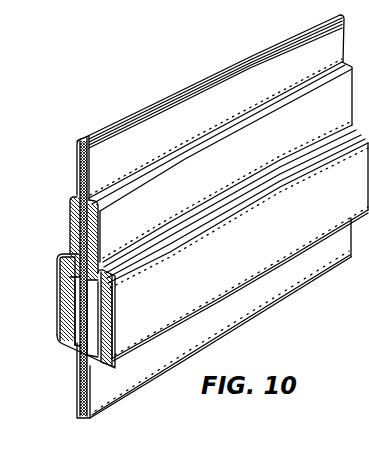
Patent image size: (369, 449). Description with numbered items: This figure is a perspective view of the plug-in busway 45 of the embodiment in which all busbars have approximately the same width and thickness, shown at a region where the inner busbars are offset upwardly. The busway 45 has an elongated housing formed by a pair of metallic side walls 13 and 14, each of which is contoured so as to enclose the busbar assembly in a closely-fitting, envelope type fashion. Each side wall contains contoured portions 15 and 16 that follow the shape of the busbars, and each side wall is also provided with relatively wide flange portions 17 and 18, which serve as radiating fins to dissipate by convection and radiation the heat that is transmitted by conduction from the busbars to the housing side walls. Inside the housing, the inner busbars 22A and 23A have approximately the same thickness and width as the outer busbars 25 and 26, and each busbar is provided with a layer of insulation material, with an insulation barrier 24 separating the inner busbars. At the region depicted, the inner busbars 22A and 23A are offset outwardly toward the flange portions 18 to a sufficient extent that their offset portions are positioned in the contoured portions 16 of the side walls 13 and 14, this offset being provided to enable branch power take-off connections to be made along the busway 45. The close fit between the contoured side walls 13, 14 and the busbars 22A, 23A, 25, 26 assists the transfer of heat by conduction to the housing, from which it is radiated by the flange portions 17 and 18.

The side wall 13 is at (77, 163).
The side wall 14 is at (202, 337).
The contoured portion 15 is at (169, 291).
The contoured portion 16 is at (136, 227).
The flange portion 17 is at (131, 391).
The flange portion 18 is at (118, 171).
The inner busbar 22A is at (70, 232).
The inner busbar 23A is at (82, 242).
The insulation barrier 24 is at (83, 316).
The outer busbar 25 is at (66, 294).
The outer busbar 26 is at (104, 335).
The plug-in busway 45 is at (195, 78).